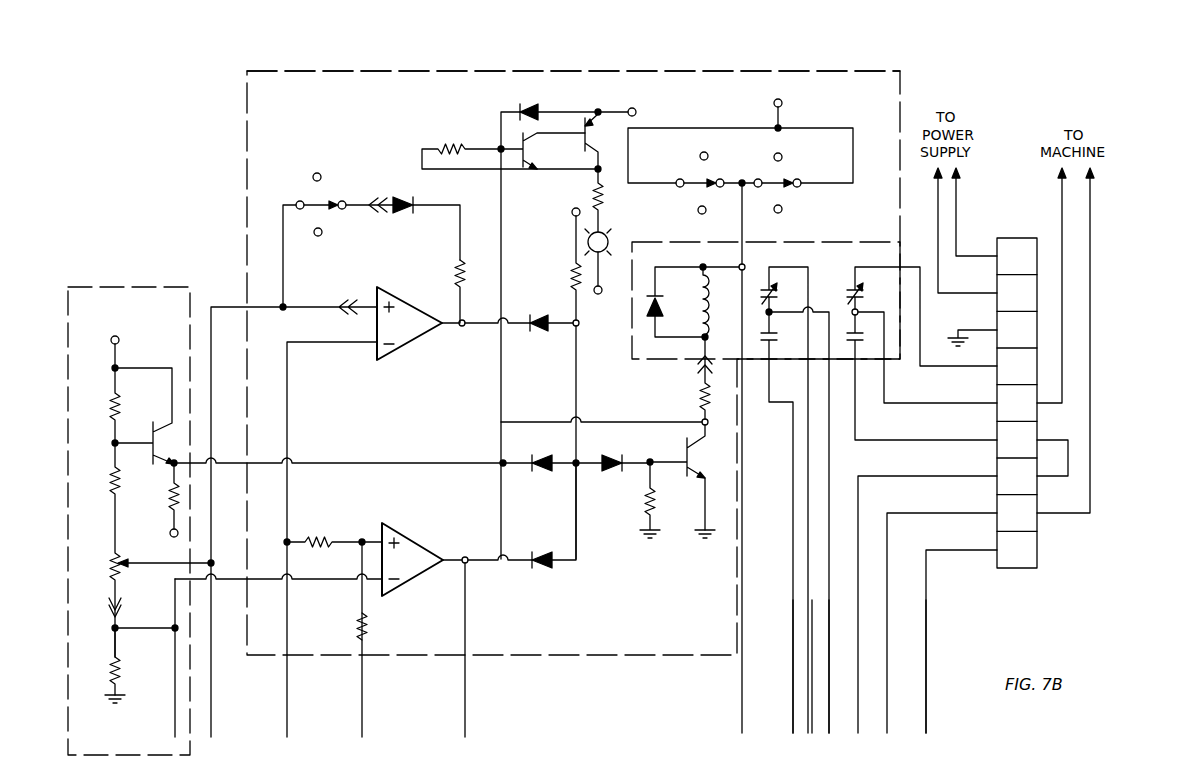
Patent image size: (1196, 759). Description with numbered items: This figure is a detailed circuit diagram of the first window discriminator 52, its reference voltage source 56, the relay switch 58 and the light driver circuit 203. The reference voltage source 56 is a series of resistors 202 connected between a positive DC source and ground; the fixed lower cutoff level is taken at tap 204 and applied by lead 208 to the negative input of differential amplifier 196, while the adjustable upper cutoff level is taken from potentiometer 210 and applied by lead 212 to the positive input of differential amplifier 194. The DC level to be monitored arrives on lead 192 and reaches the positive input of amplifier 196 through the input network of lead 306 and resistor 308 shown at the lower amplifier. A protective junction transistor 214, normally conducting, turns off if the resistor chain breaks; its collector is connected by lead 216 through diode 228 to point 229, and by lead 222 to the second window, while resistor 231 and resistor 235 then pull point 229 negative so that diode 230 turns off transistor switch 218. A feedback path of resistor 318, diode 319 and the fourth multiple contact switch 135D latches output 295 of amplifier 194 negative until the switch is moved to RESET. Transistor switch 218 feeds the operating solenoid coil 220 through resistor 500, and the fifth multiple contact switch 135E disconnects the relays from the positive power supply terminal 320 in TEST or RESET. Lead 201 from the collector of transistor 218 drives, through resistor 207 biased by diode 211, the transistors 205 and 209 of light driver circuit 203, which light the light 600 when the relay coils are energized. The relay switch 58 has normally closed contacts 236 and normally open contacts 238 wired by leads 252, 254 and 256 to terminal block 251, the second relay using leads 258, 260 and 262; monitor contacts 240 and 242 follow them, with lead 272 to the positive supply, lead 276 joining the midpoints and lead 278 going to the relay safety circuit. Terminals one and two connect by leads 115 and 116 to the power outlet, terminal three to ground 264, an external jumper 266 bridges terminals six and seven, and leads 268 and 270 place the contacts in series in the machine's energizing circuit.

The reference voltage source 56 is at (130, 285).
The window discriminator 52 is at (247, 262).
The light driver circuit 203 is at (514, 70).
The relay switch 58 is at (866, 240).
The resistors 202 is at (113, 400).
The tap 204 is at (113, 630).
The protective junction transistor 214 is at (160, 431).
The resistor 235 is at (166, 495).
The potentiometer 210 is at (154, 563).
The transistor 205 is at (168, 628).
The lead 208 is at (175, 697).
The lead 212 is at (212, 490).
The lead 216 is at (422, 462).
The second lead 192 is at (289, 693).
The conductor 306 is at (364, 693).
The resistor 308 is at (367, 615).
The fourth multiple contact switch 135D is at (342, 179).
The diode 319 is at (405, 212).
The resistor 318 is at (453, 267).
The differential amplifier 194 is at (420, 336).
The output 295 is at (546, 330).
The differential amplifier 196 is at (420, 545).
The lead 222 is at (503, 693).
The resistor 207 is at (455, 144).
The diode 211 is at (531, 103).
The transistor 209 is at (580, 130).
The light 600 is at (612, 235).
The resistor 231 is at (572, 270).
The fifth multiple contact switch 135E is at (692, 192).
The positive power supply terminal 320 is at (783, 103).
The operating solenoid coil 220 is at (693, 302).
The resistor 500 is at (702, 395).
The lead 201 is at (612, 421).
The transistor switch 218 is at (686, 468).
The diode 228 is at (535, 454).
The point 229 is at (574, 467).
The diode 230 is at (606, 455).
The normally closed monitor contacts 240 is at (770, 285).
The normally open monitor contacts 242 is at (773, 348).
The normally closed contacts 236 is at (853, 285).
The normally open contacts 238 is at (876, 345).
The lead 252 is at (978, 403).
The lead 254 is at (978, 440).
The lead 256 is at (978, 476).
The lead 258 is at (978, 513).
The lead 260 is at (978, 550).
The lead 262 is at (928, 581).
The lead 278 is at (792, 555).
The lead 272 is at (811, 600).
The lead 276 is at (828, 628).
The terminal block 251 is at (1005, 238).
The lead 115 is at (938, 213).
The lead 116 is at (956, 218).
The ground 264 is at (986, 330).
The lead 268 is at (1061, 233).
The external jumper 266 is at (1069, 468).
The lead 270 is at (1065, 514).